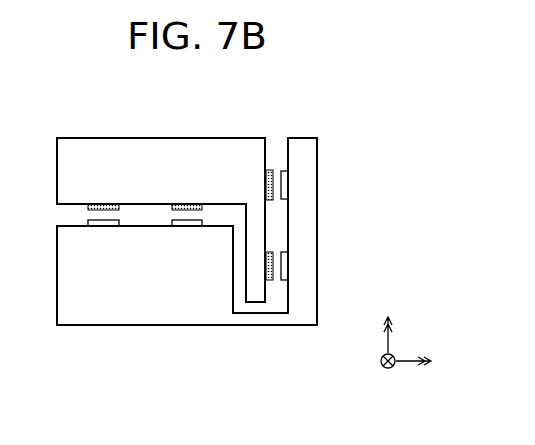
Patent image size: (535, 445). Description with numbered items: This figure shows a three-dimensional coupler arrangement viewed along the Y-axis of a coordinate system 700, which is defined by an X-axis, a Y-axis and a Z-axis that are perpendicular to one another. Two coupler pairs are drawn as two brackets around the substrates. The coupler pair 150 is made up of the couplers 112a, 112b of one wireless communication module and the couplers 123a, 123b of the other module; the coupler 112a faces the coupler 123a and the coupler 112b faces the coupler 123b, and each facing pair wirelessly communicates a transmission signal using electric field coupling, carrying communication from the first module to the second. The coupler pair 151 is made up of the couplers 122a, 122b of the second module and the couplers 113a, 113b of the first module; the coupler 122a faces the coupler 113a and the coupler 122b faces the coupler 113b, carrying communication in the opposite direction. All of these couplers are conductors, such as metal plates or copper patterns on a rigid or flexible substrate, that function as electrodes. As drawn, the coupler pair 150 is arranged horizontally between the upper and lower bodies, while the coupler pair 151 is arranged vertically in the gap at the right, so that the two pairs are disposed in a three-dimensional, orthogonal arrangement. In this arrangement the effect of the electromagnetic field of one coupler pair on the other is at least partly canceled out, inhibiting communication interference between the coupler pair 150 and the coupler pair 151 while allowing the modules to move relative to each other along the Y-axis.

The coupler pair 150 is at (233, 135).
The coupler pair 151 is at (372, 160).
The coupler 123a is at (103, 203).
The coupler 123b is at (181, 203).
The coupler 112a is at (103, 228).
The coupler 112b is at (180, 228).
The coupler 122a is at (270, 281).
The coupler 122b is at (270, 170).
The coupler 113a is at (289, 263).
The coupler 113b is at (289, 185).
The coordinate system 700 is at (416, 341).